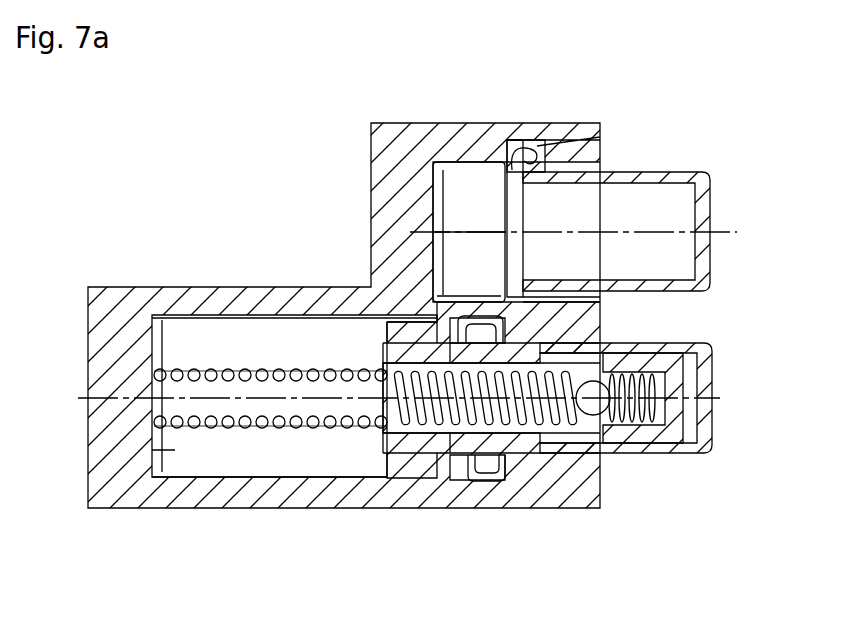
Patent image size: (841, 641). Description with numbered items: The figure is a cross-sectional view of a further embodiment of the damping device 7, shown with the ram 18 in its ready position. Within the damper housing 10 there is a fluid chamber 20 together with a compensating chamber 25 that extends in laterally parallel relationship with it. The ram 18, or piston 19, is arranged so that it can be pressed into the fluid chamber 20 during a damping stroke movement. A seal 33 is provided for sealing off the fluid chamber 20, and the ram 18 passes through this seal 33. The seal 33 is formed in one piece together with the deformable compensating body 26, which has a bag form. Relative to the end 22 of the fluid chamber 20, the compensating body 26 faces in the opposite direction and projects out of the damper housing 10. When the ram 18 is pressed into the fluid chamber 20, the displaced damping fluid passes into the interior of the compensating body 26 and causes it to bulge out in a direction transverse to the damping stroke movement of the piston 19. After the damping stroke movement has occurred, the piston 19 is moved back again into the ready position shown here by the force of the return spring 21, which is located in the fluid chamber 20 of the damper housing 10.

The damping device 7 is at (312, 165).
The damper housing 10 is at (218, 497).
The ram 18 is at (640, 448).
The piston 19 is at (443, 468).
The fluid chamber 20 is at (313, 450).
The return spring 21 is at (195, 375).
The end of the fluid chamber 22 is at (152, 450).
The compensating chamber 25 is at (478, 190).
The compensating body 26 is at (702, 215).
The seal 33 is at (503, 330).